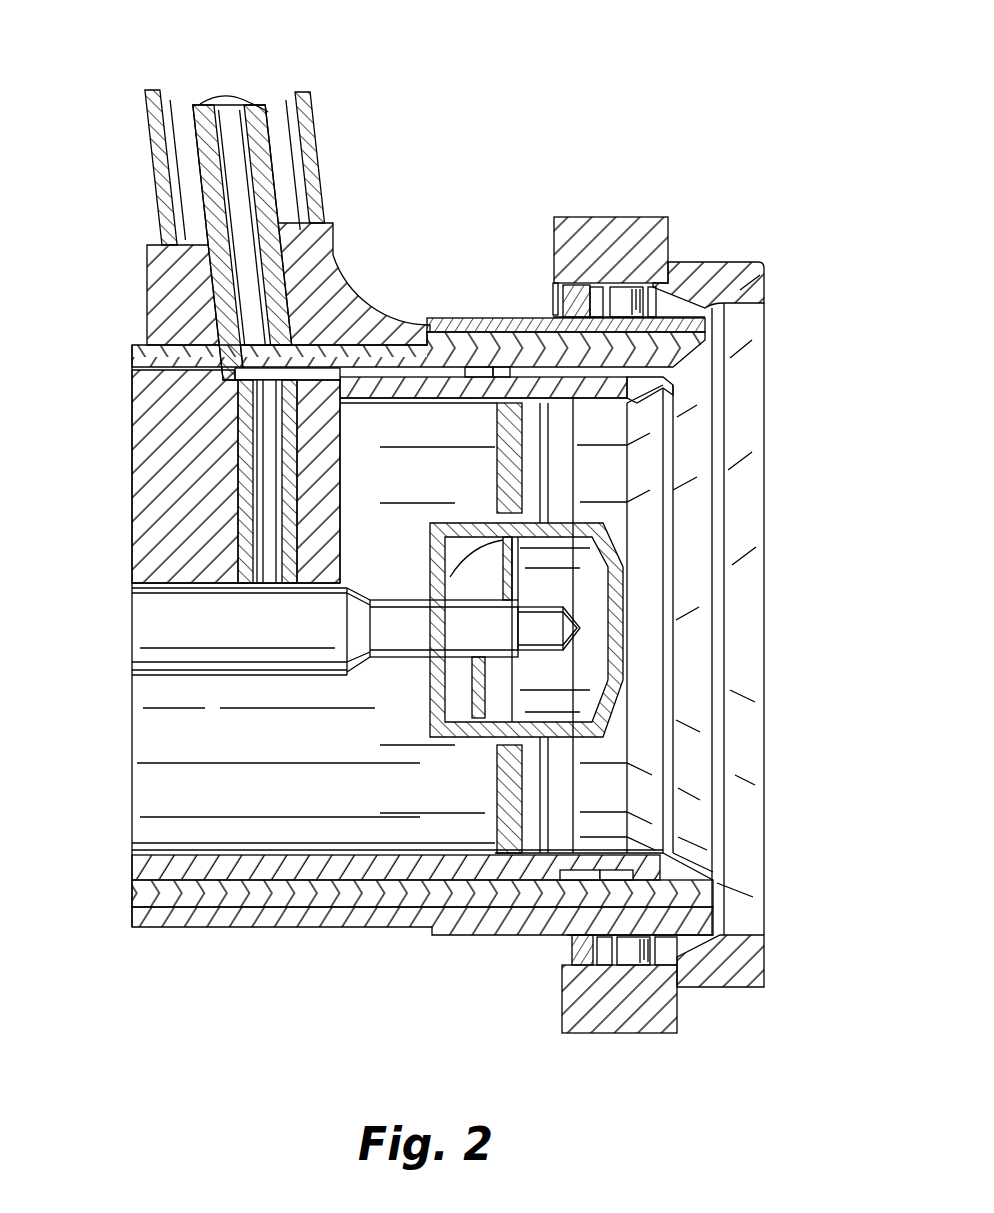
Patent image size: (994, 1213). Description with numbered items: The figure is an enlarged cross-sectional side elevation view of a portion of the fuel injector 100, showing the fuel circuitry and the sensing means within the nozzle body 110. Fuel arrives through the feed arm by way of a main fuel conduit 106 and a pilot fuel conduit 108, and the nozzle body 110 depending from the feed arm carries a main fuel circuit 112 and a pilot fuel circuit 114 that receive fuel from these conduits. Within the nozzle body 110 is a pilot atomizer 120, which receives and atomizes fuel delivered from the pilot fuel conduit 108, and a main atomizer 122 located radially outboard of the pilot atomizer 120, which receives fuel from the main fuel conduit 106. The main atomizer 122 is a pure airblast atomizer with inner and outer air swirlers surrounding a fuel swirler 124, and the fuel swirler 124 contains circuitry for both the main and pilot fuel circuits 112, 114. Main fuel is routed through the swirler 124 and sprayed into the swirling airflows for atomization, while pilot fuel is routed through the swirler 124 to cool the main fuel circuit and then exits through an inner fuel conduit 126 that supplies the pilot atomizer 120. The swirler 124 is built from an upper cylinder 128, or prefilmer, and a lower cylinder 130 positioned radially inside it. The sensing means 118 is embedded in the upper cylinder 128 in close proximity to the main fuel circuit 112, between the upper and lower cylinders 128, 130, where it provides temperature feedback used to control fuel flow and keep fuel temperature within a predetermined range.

The fuel injector 100 is at (631, 122).
The main fuel conduit 106 is at (222, 118).
The pilot fuel conduit 108 is at (263, 118).
The nozzle body 110 is at (186, 928).
The main fuel circuit 112 is at (562, 370).
The pilot fuel circuit 114 is at (268, 548).
The sensing means 118 is at (150, 344).
The pilot atomizer 120 is at (580, 630).
The main atomizer 122 is at (712, 360).
The fuel swirler 124 is at (676, 412).
The inner fuel conduit 126 is at (240, 478).
The upper cylinder 128 is at (136, 363).
The lower cylinder 130 is at (130, 433).